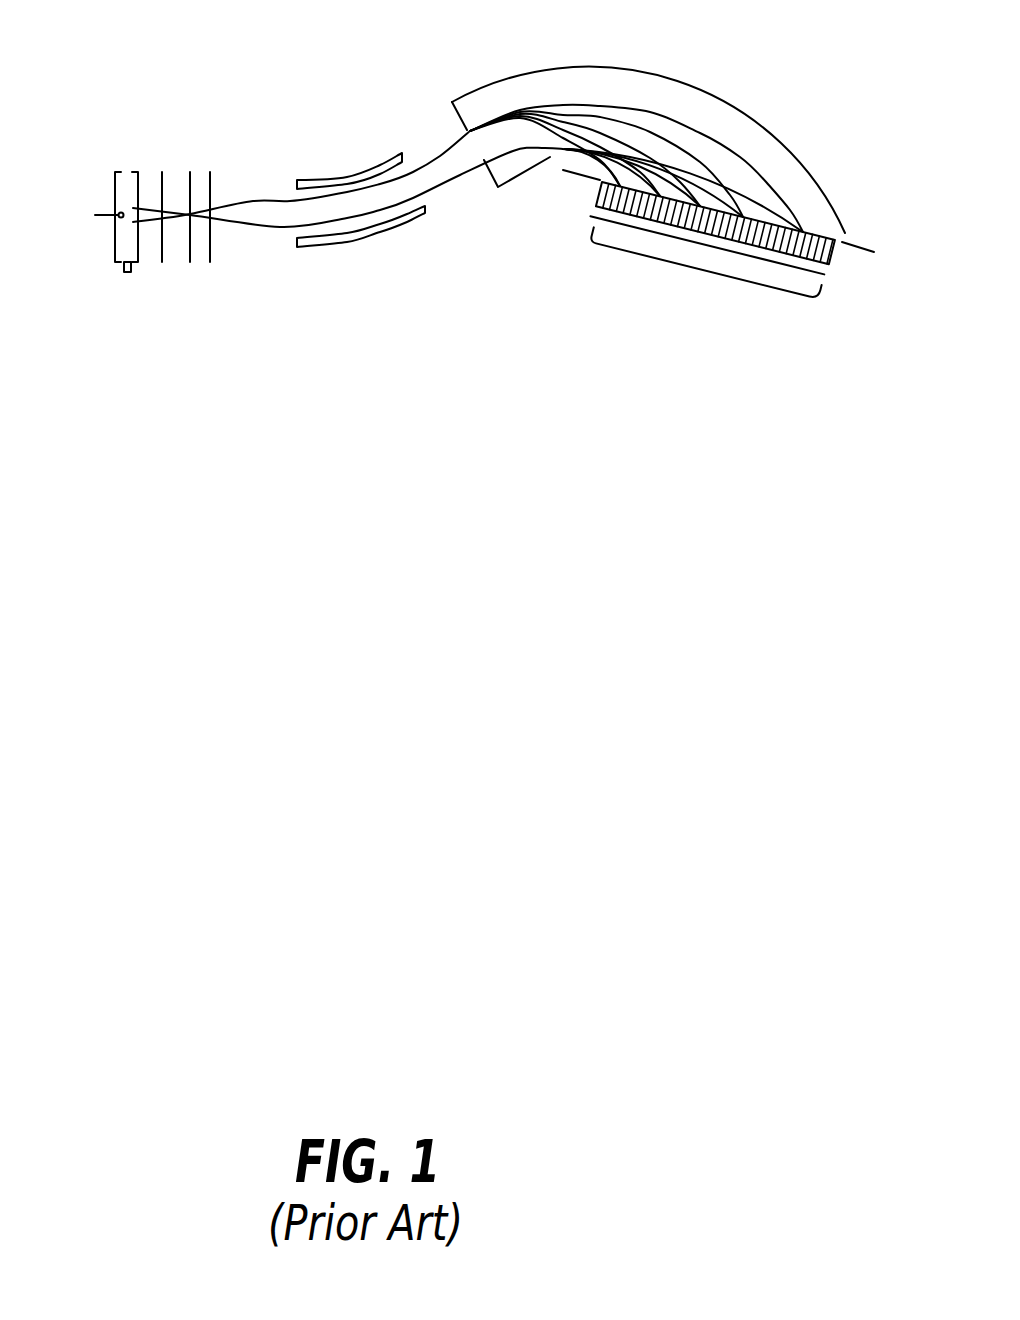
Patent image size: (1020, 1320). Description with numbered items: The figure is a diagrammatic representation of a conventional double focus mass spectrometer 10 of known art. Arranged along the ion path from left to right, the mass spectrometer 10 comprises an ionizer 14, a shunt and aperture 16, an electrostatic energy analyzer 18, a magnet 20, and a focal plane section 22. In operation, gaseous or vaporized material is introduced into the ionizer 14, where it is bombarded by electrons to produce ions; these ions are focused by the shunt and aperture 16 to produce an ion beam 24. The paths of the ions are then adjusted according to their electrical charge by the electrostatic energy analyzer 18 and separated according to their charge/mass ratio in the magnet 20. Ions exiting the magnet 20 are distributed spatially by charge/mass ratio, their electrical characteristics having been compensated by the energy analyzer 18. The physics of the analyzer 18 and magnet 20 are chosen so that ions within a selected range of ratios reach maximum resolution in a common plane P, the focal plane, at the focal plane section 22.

The double focus mass spectrometer 10 is at (150, 90).
The ionizer 14 is at (121, 238).
The shunt and aperture 16 is at (177, 199).
The electrostatic energy analyzer 18 is at (365, 168).
The magnet 20 is at (481, 87).
The focal plane section 22 is at (712, 271).
The ion beam 24 is at (274, 192).
The common plane P is at (862, 252).